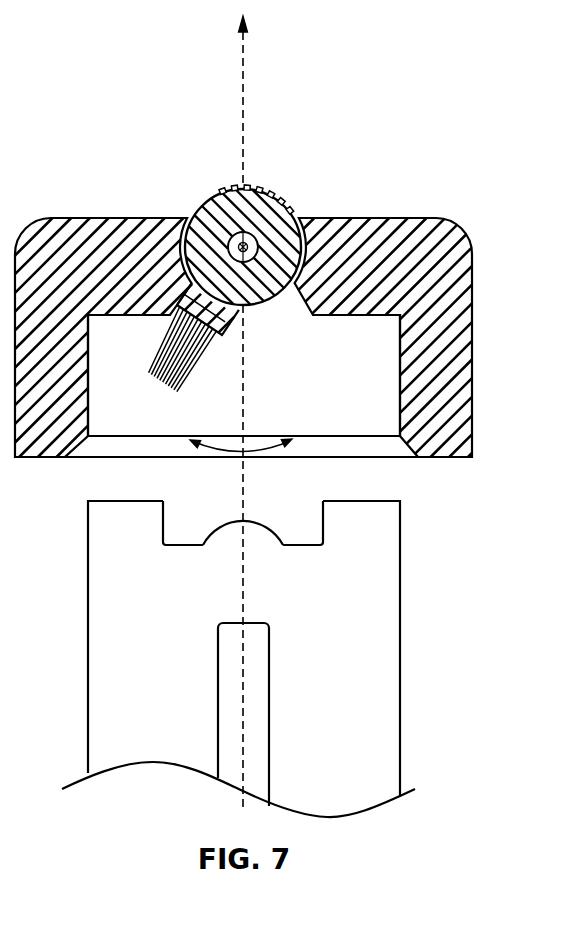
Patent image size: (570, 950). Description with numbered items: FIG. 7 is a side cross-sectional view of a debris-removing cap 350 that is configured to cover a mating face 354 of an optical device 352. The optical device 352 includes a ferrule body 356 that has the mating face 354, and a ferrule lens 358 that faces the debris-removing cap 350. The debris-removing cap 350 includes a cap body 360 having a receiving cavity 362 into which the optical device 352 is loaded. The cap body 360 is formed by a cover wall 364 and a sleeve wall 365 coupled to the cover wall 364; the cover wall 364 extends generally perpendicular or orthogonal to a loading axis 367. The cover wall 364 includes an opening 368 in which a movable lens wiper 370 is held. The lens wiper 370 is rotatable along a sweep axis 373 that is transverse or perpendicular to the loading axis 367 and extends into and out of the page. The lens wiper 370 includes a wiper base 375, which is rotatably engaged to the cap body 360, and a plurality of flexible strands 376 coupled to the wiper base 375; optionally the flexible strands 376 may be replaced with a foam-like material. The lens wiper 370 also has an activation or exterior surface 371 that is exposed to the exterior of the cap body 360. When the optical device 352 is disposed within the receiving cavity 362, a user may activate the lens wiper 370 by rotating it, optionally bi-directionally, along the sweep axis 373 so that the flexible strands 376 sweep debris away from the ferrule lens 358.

The debris-removing cap 350 is at (472, 216).
The optical device 352 is at (405, 600).
The mating face 354 is at (298, 537).
The ferrule body 356 is at (88, 622).
The ferrule lens 358 is at (213, 531).
The cap body 360 is at (475, 298).
The receiving cavity 362 is at (350, 400).
The cover wall 364 is at (125, 245).
The sleeve wall 365 is at (450, 376).
The loading axis 367 is at (243, 63).
The opening 368 is at (175, 325).
The lens wiper 370 is at (284, 247).
The activation surface 371 is at (265, 186).
The sweep axis 373 is at (240, 243).
The wiper base 375 is at (293, 212).
The flexible strands 376 is at (201, 372).